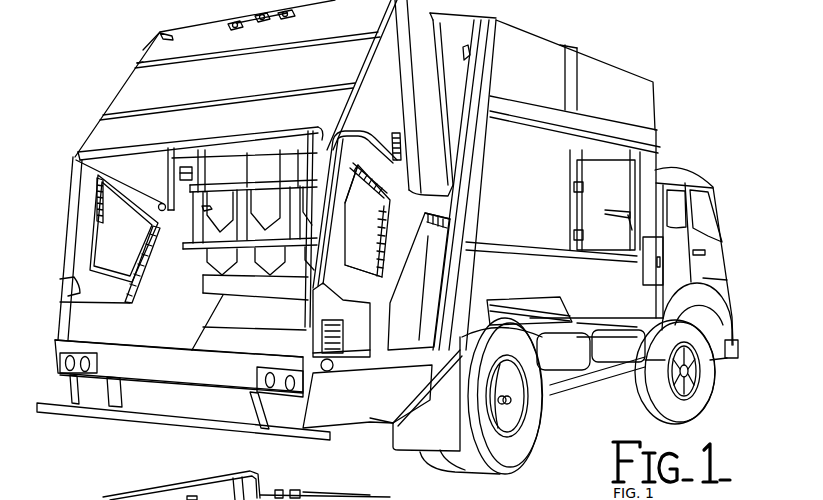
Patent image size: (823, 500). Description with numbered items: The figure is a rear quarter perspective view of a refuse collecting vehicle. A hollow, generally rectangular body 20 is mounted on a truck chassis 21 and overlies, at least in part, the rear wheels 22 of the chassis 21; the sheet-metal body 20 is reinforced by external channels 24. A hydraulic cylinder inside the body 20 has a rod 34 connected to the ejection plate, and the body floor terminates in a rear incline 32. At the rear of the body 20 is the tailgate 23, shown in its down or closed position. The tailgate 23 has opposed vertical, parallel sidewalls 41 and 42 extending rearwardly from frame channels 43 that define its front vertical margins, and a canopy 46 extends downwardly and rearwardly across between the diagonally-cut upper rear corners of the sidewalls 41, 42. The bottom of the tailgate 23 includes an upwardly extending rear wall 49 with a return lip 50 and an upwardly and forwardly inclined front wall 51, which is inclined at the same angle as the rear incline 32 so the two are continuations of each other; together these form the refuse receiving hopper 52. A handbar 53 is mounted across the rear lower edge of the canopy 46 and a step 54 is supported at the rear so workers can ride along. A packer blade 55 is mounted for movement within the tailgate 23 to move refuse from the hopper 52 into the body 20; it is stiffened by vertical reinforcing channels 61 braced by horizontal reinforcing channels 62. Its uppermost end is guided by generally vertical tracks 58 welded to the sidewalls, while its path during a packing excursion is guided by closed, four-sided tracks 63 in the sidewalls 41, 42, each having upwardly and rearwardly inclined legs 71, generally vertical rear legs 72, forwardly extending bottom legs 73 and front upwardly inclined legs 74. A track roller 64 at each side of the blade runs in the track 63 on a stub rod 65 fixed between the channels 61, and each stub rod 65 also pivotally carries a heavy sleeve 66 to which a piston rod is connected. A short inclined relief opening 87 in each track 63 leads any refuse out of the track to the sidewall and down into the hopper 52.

The body 20 is at (615, 60).
The truck chassis 21 is at (588, 392).
The rear wheels 22 is at (535, 452).
The tailgate 23 is at (142, 50).
The external channels 24 is at (597, 88).
The rear incline 32 is at (255, 302).
The rod 34 is at (527, 310).
The sidewall 41 is at (181, 322).
The sidewall 42 is at (367, 221).
The frame channels 43 is at (467, 50).
The canopy 46 is at (240, 76).
The rear wall 49 is at (246, 397).
The return lip 50 is at (212, 340).
The front wall 51 is at (247, 346).
The refuse receiving hopper 52 is at (105, 323).
The handbar 53 is at (75, 158).
The step 54 is at (152, 420).
The packer blade 55 is at (172, 248).
The tracks 58 is at (412, 103).
The reinforcing channels 61 is at (178, 195).
The horizontal reinforcing channels 62 is at (263, 140).
The tracks 63 is at (88, 290).
The track roller 64 is at (158, 203).
The stub rod 65 is at (187, 210).
The sleeve 66 is at (166, 217).
The legs 71 is at (377, 180).
The rear legs 72 is at (346, 214).
The bottom legs 73 is at (363, 281).
The legs 74 is at (422, 222).
The relief opening 87 is at (72, 294).